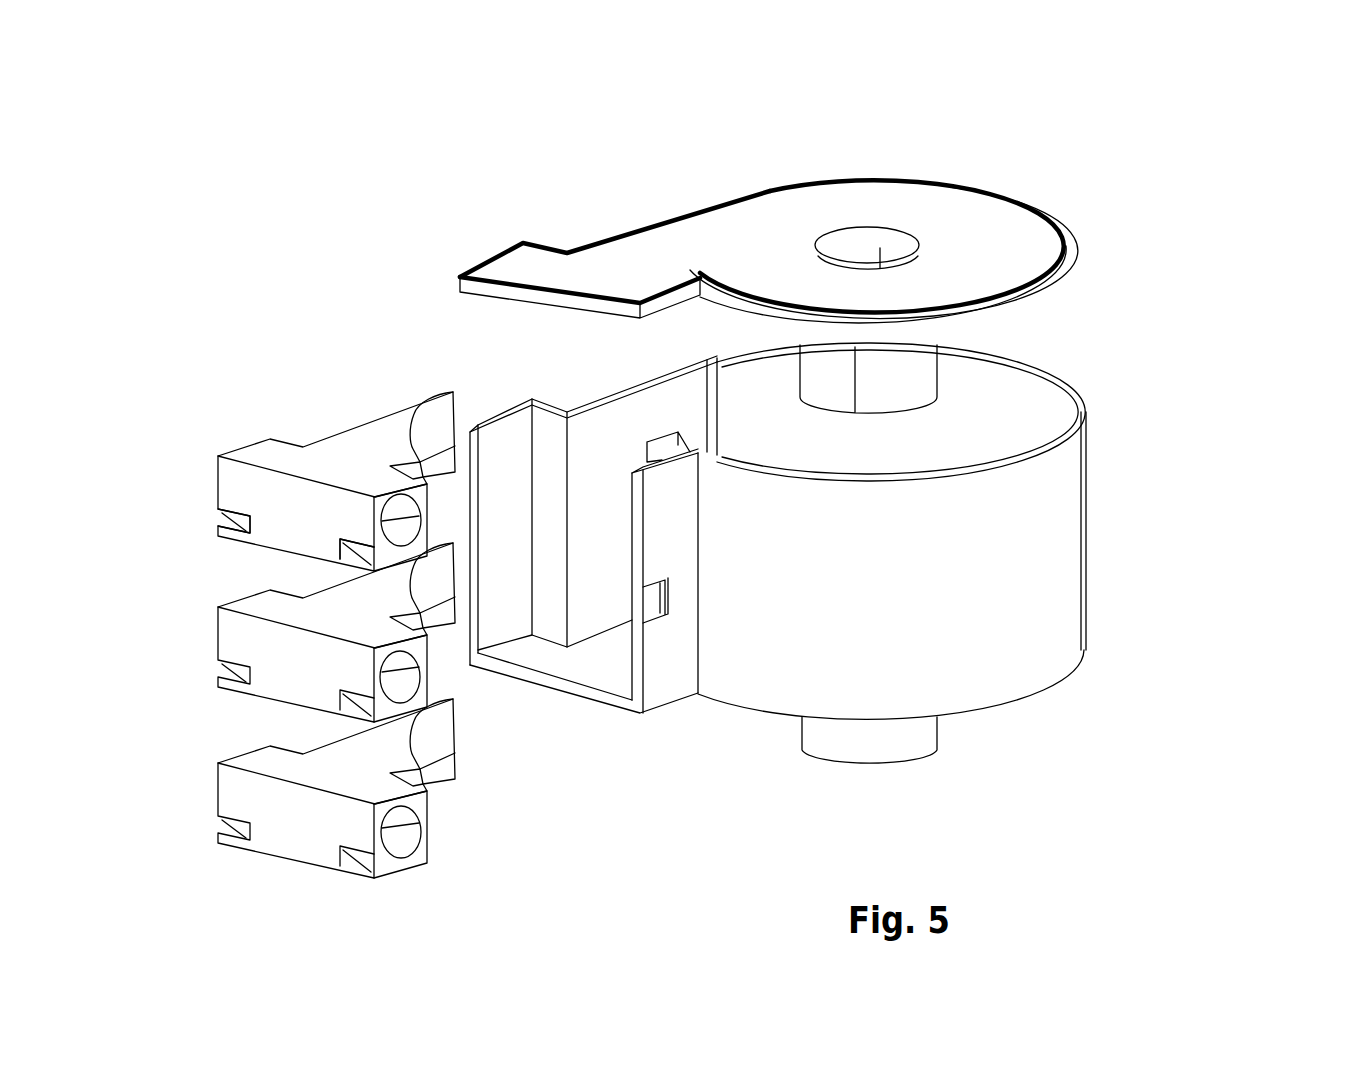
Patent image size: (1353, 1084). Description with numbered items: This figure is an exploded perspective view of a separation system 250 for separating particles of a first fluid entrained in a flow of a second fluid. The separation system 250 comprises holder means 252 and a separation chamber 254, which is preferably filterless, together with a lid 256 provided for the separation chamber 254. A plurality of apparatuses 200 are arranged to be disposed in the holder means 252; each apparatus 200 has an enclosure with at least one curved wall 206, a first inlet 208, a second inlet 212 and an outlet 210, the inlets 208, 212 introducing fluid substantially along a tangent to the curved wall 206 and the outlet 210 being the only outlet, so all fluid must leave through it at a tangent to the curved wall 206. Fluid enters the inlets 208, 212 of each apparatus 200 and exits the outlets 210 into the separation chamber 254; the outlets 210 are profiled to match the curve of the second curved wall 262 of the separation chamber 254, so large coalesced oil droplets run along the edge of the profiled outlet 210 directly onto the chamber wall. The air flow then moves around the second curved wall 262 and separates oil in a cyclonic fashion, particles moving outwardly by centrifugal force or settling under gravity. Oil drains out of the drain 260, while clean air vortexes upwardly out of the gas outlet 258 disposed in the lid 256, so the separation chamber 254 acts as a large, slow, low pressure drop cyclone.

The apparatus 200 is at (242, 478).
The curved wall 206 is at (400, 530).
The first inlet 208 is at (236, 522).
The second inlet 212 is at (345, 556).
The outlet 210 is at (456, 426).
The separation system 250 is at (886, 457).
The holder means 252 is at (670, 675).
The separation chamber 254 is at (1047, 583).
The lid 256 is at (1057, 255).
The gas outlet 258 is at (884, 233).
The drain 260 is at (875, 752).
The second curved wall 262 is at (1025, 400).